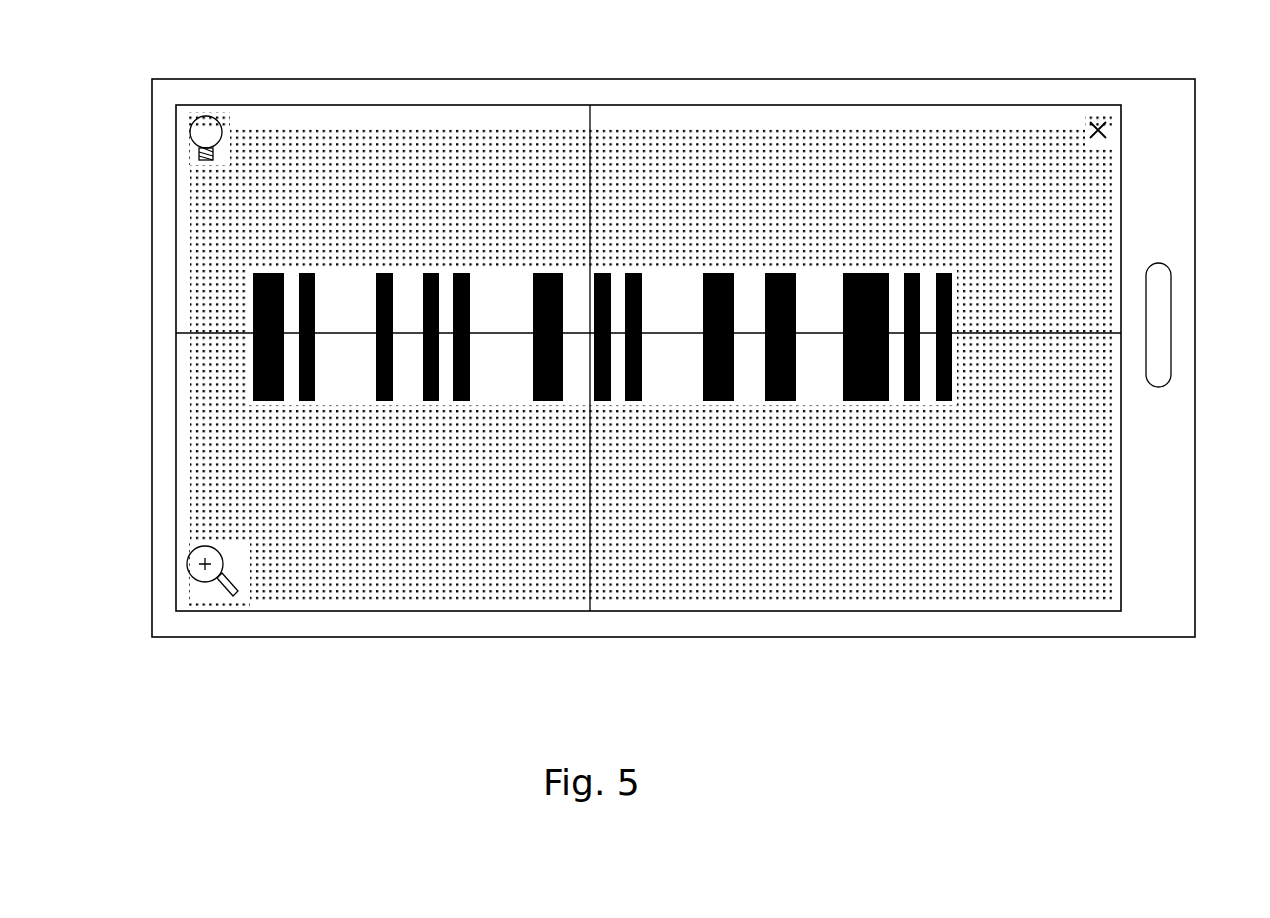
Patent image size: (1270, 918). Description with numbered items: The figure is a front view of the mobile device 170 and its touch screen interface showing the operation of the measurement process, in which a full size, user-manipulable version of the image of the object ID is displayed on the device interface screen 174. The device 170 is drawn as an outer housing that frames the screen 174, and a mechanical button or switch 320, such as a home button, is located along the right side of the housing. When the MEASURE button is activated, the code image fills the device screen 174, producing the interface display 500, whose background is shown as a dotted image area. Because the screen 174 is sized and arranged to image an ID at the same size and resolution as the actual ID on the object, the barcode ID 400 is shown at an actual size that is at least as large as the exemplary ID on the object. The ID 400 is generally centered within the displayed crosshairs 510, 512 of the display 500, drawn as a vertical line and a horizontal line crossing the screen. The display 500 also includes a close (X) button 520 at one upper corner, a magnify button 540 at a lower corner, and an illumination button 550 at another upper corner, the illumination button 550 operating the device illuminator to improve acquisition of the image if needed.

The device 170 is at (266, 642).
The device interface screen 174 is at (325, 578).
The interface display 500 is at (1010, 593).
The ID 400 is at (537, 272).
The crosshair 510 is at (590, 125).
The crosshair 512 is at (1078, 333).
The close (X) button 520 is at (1098, 125).
The zoom icon 540 is at (205, 582).
The illumination button 550 is at (190, 131).
The mechanical button 320 is at (1171, 322).